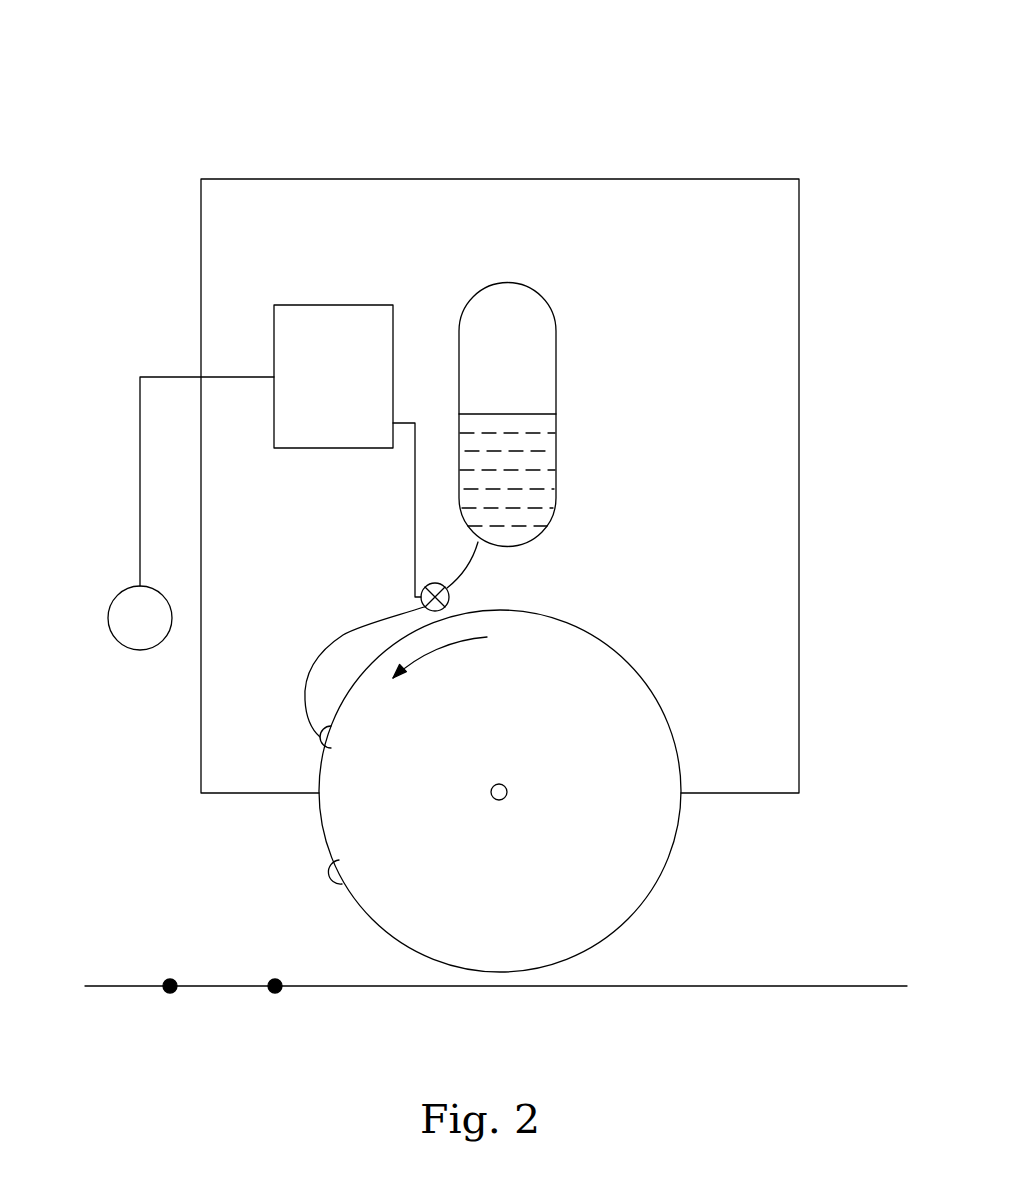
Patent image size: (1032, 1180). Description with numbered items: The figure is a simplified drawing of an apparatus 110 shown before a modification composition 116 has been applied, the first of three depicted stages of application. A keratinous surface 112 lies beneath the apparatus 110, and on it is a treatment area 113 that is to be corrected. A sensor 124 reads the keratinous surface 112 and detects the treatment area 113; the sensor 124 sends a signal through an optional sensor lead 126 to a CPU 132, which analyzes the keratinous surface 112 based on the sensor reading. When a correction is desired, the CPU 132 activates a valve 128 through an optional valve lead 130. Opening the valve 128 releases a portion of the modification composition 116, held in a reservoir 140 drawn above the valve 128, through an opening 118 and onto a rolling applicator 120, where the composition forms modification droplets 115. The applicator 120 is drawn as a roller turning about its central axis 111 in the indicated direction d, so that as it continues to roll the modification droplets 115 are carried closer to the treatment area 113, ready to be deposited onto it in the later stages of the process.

The apparatus 110 is at (746, 118).
The axis of rotation 111 is at (505, 783).
The keratinous surface 112 is at (835, 986).
The treatment area 113 is at (265, 984).
The modification droplets 115 is at (315, 753).
The modification composition 116 is at (538, 470).
The opening 118 is at (312, 735).
The applicator 120 is at (653, 870).
The sensor 124 is at (110, 605).
The sensor lead 126 is at (140, 555).
The valve 128 is at (450, 596).
The valve lead 130 is at (415, 500).
The CPU 132 is at (274, 418).
The reservoir 140 is at (556, 385).